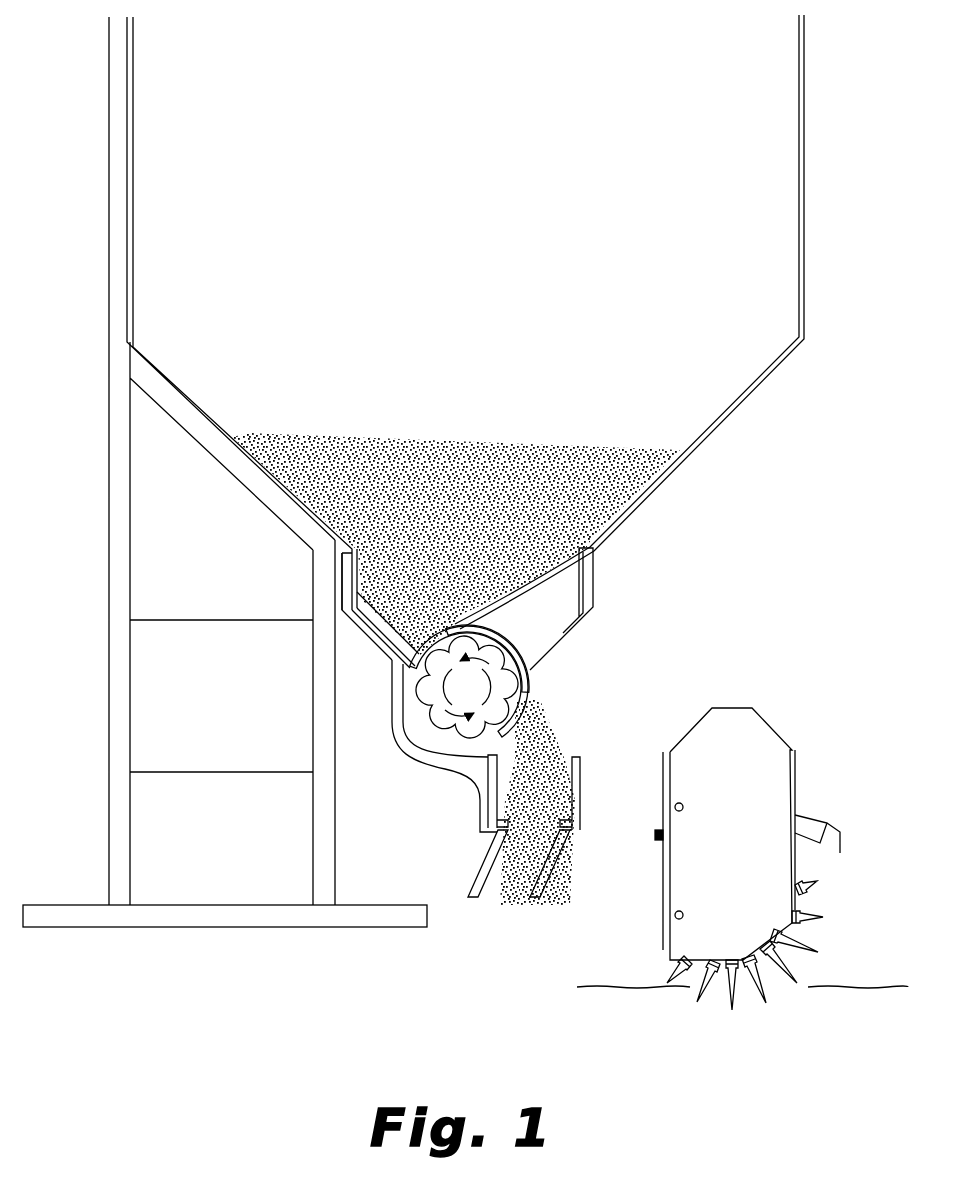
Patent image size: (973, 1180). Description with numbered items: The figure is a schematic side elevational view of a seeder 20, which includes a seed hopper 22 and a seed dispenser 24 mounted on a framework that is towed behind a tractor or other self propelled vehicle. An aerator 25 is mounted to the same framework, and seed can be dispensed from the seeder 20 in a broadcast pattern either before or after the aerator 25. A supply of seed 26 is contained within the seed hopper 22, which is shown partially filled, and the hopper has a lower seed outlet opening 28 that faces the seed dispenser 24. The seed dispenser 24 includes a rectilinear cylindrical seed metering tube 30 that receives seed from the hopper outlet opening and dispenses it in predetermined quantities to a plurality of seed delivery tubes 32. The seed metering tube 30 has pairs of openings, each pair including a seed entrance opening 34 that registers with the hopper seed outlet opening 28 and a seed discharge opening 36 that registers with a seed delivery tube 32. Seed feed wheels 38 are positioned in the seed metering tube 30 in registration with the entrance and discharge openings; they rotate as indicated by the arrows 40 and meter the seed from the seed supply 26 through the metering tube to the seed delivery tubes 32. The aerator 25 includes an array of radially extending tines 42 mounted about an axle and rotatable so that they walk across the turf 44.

The seeder 20 is at (761, 428).
The seed hopper 22 is at (809, 144).
The seed dispenser 24 is at (395, 734).
The aerator 25 is at (824, 930).
The supply of seed 26 is at (557, 478).
The lower seed outlet opening 28 is at (416, 614).
The seed metering tube 30 is at (513, 630).
The seed delivery tubes 32 is at (487, 863).
The seed entrance opening 34 is at (362, 647).
The seed discharge opening 36 is at (538, 712).
The seed feed wheels 38 is at (477, 697).
The arrows 40 is at (466, 717).
The tines 42 is at (783, 972).
The turf 44 is at (606, 985).